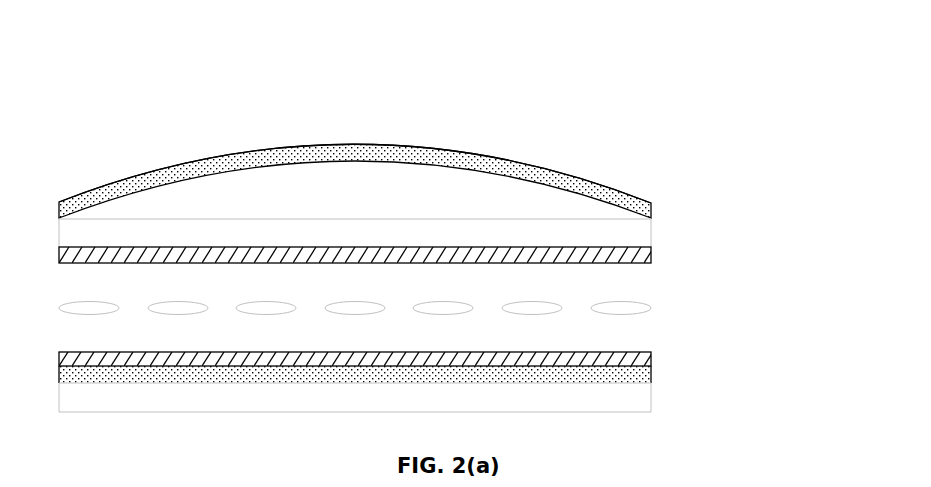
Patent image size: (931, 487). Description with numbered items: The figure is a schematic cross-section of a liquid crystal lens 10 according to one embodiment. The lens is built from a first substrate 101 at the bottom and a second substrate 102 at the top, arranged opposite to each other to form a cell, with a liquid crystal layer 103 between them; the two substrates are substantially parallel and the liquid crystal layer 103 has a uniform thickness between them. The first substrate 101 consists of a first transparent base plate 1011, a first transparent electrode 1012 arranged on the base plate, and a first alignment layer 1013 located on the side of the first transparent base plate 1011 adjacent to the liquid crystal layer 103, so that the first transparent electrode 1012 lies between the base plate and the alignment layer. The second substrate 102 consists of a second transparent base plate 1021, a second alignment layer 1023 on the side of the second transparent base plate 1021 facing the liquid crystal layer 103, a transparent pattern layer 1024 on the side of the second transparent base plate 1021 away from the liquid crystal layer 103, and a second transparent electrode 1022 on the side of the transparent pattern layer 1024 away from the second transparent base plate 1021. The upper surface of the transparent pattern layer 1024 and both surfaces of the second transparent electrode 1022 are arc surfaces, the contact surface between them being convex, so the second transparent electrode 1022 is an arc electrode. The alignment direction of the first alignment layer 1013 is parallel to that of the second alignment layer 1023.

The liquid crystal lens 10 is at (337, 113).
The second substrate 102 is at (435, 206).
The second transparent electrode 1022 is at (620, 192).
The transparent pattern layer 1024 is at (618, 213).
The second transparent base plate 1021 is at (651, 235).
The second alignment layer 1023 is at (651, 257).
The liquid crystal layer 103 is at (628, 305).
The first substrate 101 is at (435, 379).
The first alignment layer 1013 is at (651, 357).
The first transparent electrode 1012 is at (651, 377).
The first transparent base plate 1011 is at (651, 399).